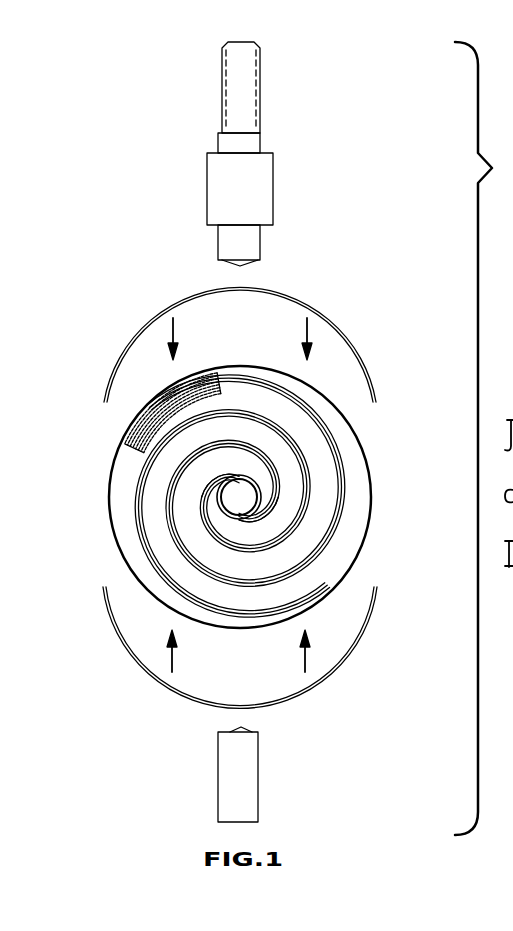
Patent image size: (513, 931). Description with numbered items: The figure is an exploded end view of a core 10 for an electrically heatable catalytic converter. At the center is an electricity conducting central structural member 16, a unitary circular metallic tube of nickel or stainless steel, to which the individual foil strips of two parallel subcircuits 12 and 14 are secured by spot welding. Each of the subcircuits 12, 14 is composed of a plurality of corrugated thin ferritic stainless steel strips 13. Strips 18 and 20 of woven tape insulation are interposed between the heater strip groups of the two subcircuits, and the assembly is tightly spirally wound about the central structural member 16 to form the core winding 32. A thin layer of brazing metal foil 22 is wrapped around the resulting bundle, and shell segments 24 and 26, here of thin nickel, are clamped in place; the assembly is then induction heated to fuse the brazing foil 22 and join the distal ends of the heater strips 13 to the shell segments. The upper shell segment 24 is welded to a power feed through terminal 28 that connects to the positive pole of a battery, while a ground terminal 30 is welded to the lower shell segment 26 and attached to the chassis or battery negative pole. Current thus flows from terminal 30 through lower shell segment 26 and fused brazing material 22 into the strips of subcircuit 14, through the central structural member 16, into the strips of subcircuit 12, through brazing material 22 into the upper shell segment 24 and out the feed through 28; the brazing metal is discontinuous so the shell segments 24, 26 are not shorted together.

The core 10 is at (484, 438).
The subcircuit 12 is at (265, 537).
The corrugated thin ferritic stainless steel strips 13 is at (197, 390).
The subcircuit 14 is at (200, 507).
The central structural member 16 is at (260, 482).
The woven tape strip 18 is at (264, 456).
The woven tape strip 20 is at (371, 535).
The brazing metal foil 22 is at (333, 400).
The upper shell segment 24 is at (327, 323).
The lower shell segment 26 is at (363, 623).
The power feed through terminal 28 is at (278, 185).
The ground terminal 30 is at (244, 767).
The core winding 32 is at (158, 472).